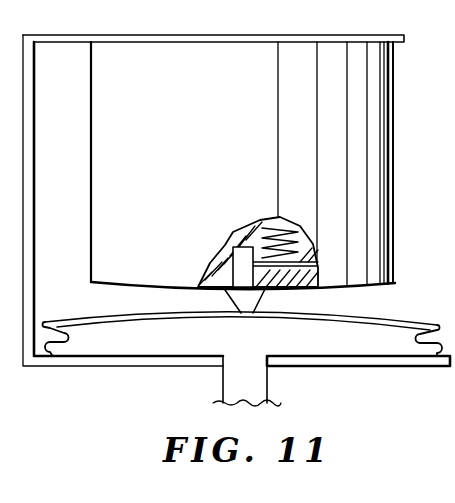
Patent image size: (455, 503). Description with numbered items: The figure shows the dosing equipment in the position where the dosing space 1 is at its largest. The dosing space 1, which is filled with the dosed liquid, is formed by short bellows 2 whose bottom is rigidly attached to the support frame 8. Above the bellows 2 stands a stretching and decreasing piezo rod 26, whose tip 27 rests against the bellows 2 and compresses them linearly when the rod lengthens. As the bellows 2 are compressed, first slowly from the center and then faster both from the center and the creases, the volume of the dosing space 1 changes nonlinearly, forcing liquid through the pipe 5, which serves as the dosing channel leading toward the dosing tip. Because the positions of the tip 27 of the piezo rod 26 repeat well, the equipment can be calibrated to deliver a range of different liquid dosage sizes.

The dosing space 1 is at (363, 387).
The bellows 2 is at (440, 325).
The pipe 5 is at (232, 383).
The support frame 8 is at (50, 402).
The piezo rod 26 is at (425, 93).
The tip of piezo rod 27 is at (245, 315).